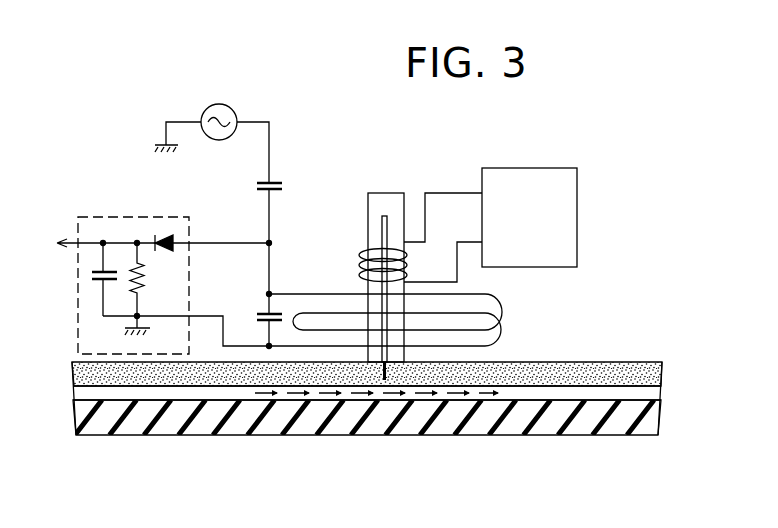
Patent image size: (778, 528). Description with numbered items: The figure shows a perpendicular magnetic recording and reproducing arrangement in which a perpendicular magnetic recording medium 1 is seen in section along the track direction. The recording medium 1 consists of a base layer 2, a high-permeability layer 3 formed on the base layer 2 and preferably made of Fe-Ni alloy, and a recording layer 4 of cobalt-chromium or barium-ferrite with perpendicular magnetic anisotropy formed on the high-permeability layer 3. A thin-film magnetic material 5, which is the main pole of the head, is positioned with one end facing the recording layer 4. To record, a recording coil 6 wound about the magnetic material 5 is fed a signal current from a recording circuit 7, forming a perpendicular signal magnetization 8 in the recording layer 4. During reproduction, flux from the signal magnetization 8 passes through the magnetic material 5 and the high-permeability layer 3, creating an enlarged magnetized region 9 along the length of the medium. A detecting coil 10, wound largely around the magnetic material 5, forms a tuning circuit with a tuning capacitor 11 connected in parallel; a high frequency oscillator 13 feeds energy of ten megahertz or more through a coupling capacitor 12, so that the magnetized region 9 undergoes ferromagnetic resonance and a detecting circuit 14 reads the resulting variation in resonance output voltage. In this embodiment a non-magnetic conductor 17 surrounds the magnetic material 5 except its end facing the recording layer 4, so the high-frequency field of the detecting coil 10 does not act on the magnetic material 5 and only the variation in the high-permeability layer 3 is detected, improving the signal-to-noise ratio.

The perpendicular magnetic recording medium 1 is at (685, 393).
The base layer 2 is at (609, 436).
The high-permeability layer 3 is at (607, 395).
The recording layer 4 is at (590, 372).
The thin-film magnetic material 5 is at (382, 220).
The recording coil 6 is at (360, 252).
The recording circuit 7 is at (578, 215).
The perpendicular signal magnetization 8 is at (390, 372).
The enlarged magnetized region 9 is at (438, 396).
The detecting coil 10 is at (502, 311).
The tuning capacitor 11 is at (258, 308).
The coupling capacitor 12 is at (277, 181).
The high frequency oscillator 13 is at (220, 103).
The detecting circuit 14 is at (78, 314).
The non-magnetic conductor 17 is at (385, 192).